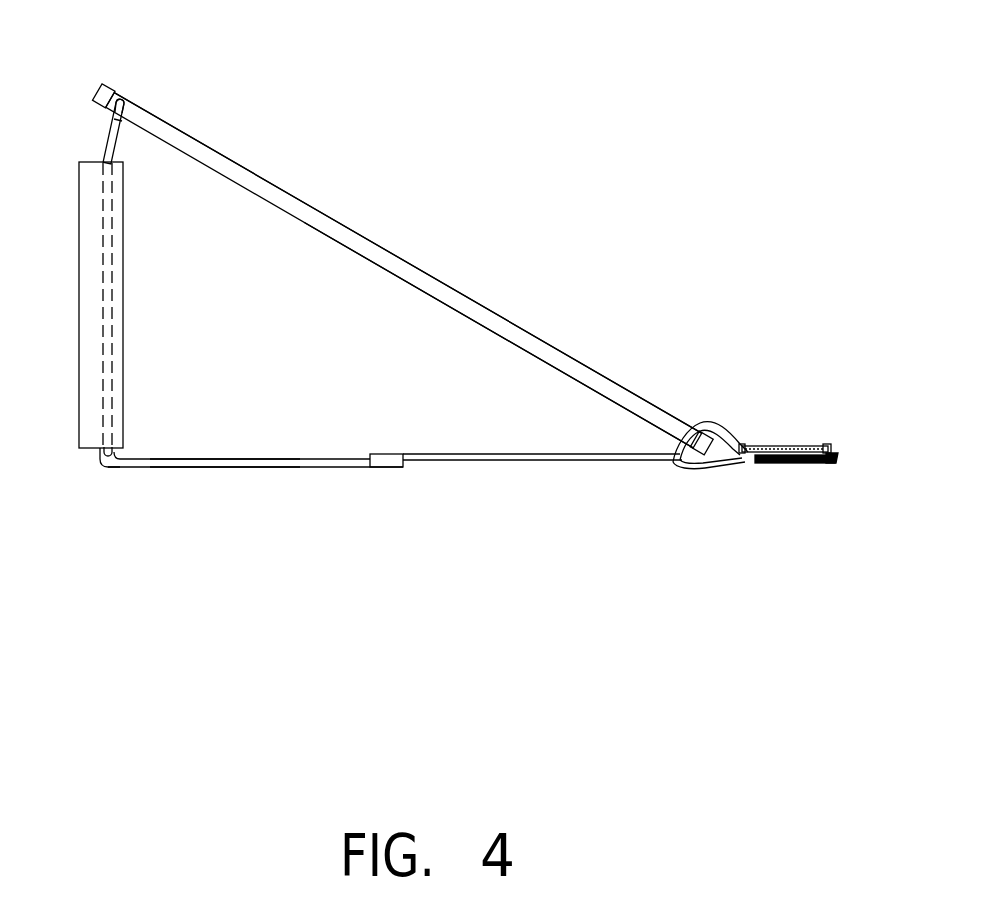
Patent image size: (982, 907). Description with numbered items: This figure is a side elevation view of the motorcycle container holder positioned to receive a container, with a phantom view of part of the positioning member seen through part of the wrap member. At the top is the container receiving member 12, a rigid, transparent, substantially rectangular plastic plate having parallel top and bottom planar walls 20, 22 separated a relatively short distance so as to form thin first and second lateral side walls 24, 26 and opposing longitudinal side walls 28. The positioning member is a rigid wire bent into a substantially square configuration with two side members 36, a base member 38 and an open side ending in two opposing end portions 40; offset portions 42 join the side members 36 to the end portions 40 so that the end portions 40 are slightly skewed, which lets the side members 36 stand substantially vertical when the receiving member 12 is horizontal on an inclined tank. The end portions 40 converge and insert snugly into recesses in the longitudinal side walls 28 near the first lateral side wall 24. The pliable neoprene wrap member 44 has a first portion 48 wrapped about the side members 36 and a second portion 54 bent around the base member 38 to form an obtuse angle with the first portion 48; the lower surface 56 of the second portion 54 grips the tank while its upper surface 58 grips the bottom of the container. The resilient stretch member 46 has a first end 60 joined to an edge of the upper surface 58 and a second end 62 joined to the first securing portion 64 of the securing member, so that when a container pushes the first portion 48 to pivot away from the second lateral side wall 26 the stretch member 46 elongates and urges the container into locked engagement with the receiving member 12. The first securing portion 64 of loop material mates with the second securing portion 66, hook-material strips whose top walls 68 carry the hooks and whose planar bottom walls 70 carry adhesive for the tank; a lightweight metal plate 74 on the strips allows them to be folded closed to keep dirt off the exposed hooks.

The container receiving member 12 is at (247, 166).
The top planar wall 20 is at (540, 338).
The bottom planar wall 22 is at (430, 297).
The first lateral side wall 24 is at (99, 86).
The second lateral side wall 26 is at (718, 465).
The longitudinal side wall 28 is at (160, 122).
The side member 36 is at (113, 250).
The base member 38 is at (120, 452).
The end portion 40 is at (112, 118).
The offset portion 42 is at (107, 143).
The wrap member 44 is at (97, 448).
The stretch member 46 is at (508, 460).
The first portion 48 is at (123, 320).
The second portion 54 is at (296, 458).
The lower surface 56 is at (222, 468).
The upper surface 58 is at (252, 459).
The first end 60 is at (388, 453).
The second end 62 is at (672, 465).
The first securing portion 64 is at (692, 424).
The second securing portion 66 is at (834, 455).
The top wall 68 is at (747, 446).
The bottom wall 70 is at (815, 447).
The metal plate 74 is at (790, 447).